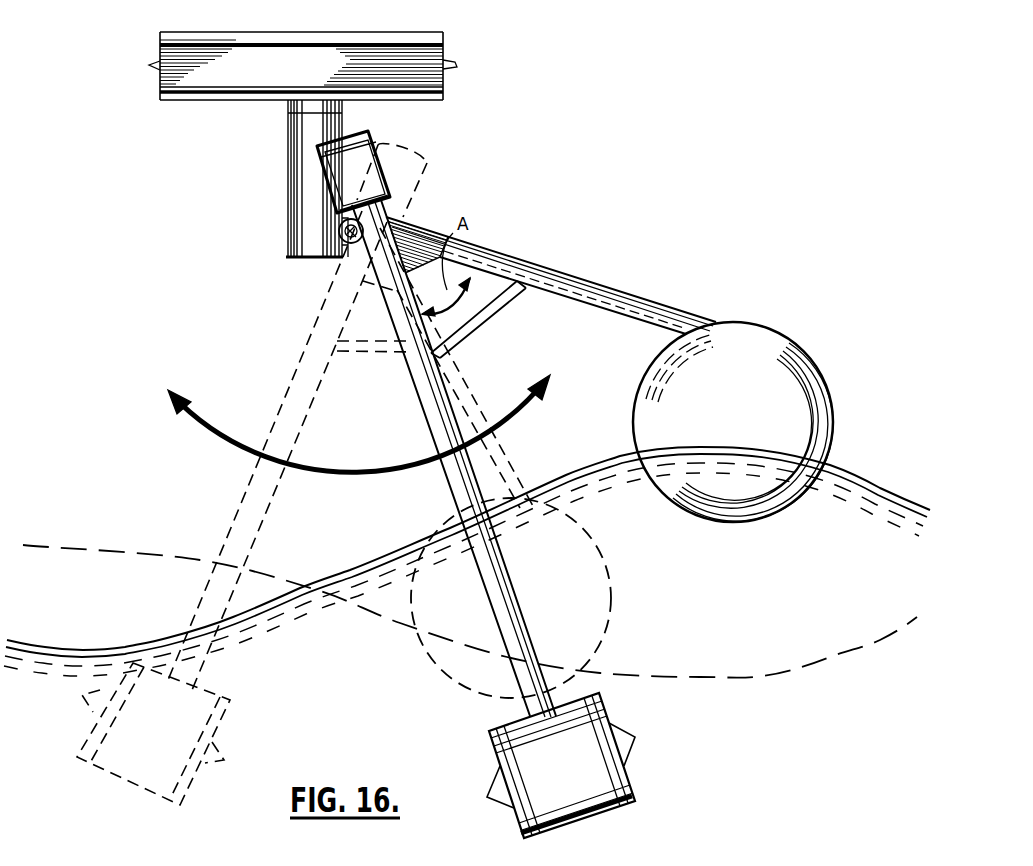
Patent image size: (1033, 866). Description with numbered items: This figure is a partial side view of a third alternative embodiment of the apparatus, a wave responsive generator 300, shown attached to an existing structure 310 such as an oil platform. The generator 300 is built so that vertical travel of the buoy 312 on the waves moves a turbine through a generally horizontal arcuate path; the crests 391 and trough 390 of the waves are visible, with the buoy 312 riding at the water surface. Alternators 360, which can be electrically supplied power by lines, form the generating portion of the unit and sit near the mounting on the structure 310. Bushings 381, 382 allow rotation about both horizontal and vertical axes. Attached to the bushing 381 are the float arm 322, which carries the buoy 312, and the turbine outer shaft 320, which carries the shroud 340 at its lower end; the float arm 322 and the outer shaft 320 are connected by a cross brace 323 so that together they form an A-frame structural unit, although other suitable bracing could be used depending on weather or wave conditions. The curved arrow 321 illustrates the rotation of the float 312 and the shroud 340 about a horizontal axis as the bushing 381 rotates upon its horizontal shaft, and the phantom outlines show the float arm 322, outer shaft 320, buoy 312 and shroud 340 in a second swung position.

The wave responsive generator 300 is at (442, 413).
The existing structure 310 is at (380, 57).
The buoy 312 is at (758, 357).
The turbine outer shaft 320 is at (522, 613).
The curved arrow 321 is at (380, 475).
The float arm 322 is at (583, 292).
The cross brace 323 is at (493, 307).
The shroud 340 is at (600, 768).
The alternator 360 is at (360, 128).
The bushing 381 is at (333, 260).
The bushing 382 is at (307, 172).
The trough 390 is at (765, 673).
The crest 391 is at (753, 450).